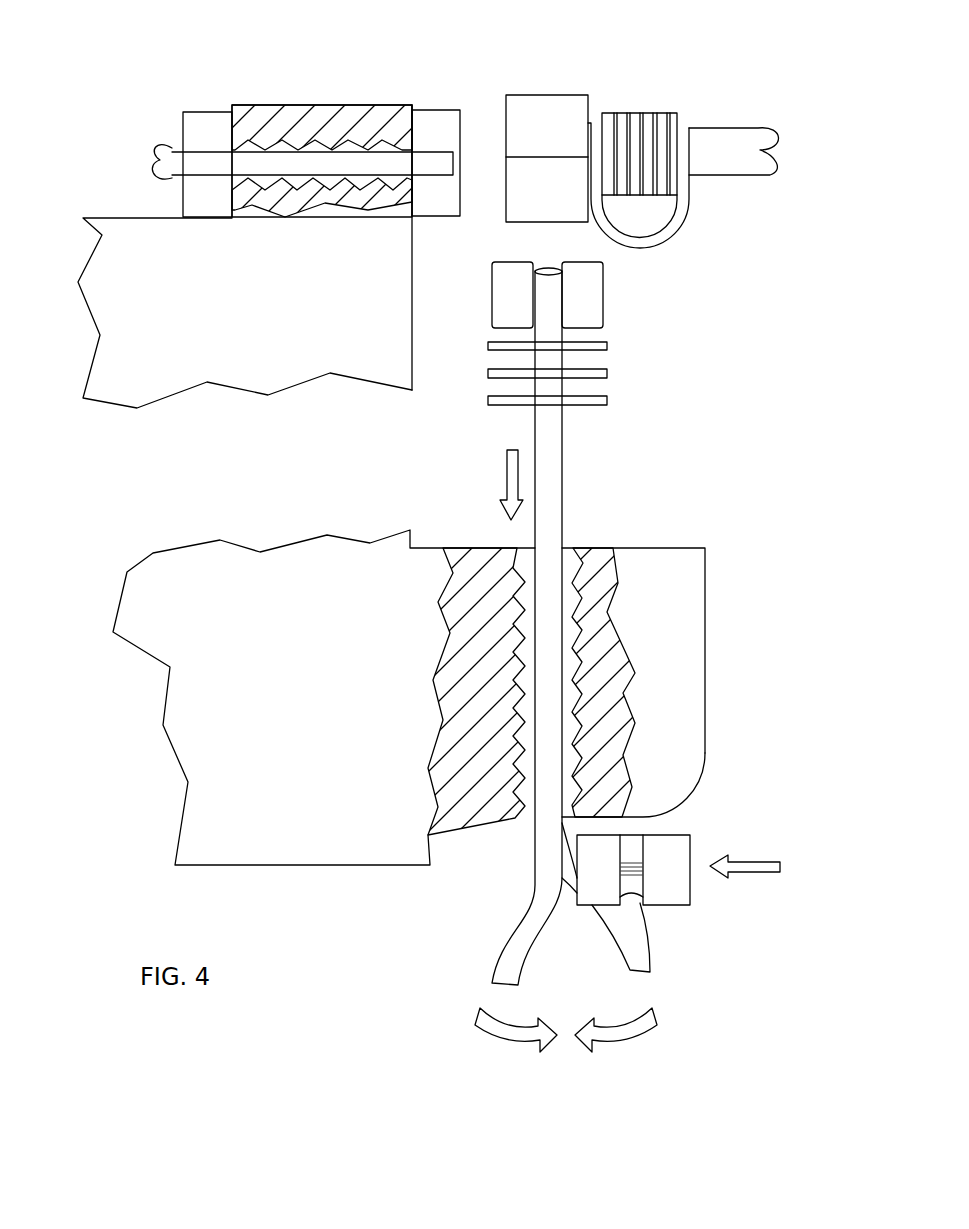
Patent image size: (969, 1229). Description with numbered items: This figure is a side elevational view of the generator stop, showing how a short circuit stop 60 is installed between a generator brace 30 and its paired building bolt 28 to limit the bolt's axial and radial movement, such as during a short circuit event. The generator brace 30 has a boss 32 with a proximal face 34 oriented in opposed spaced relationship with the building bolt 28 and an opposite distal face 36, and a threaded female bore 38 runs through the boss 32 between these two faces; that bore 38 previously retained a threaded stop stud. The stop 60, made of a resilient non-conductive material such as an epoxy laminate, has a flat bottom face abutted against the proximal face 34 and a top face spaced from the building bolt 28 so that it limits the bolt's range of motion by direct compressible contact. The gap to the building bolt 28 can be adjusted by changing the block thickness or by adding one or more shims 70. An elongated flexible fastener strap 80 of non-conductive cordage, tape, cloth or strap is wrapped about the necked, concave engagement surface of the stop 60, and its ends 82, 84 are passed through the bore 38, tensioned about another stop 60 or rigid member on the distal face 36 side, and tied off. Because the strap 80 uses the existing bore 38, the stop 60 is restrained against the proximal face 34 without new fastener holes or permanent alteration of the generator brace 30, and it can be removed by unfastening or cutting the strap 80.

The building bolt 28 is at (612, 102).
The generator brace 30 is at (153, 693).
The boss 32 is at (352, 80).
The proximal face 34 is at (412, 256).
The distal face 36 is at (232, 108).
The threaded female bore 38 is at (313, 178).
The short circuit stop 60 is at (170, 133).
The shim 70 is at (612, 334).
The fastener strap 80 is at (548, 257).
The fastener strap end 82 is at (507, 988).
The fastener strap end 84 is at (638, 975).